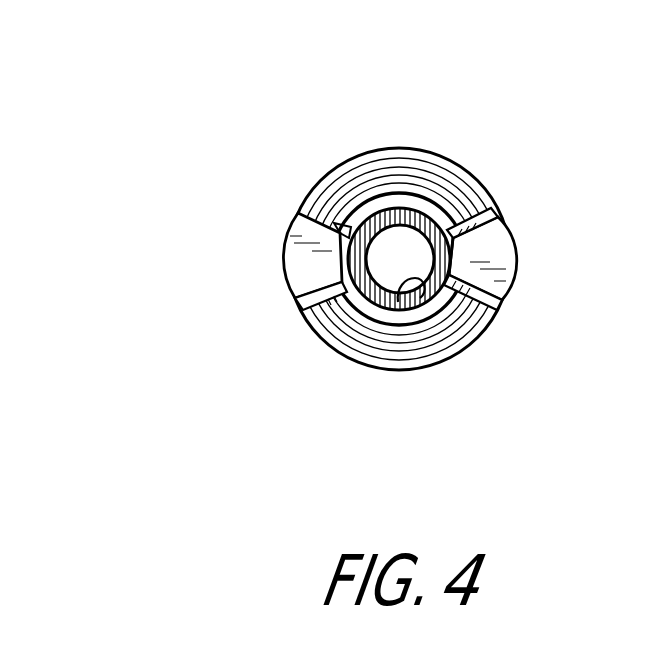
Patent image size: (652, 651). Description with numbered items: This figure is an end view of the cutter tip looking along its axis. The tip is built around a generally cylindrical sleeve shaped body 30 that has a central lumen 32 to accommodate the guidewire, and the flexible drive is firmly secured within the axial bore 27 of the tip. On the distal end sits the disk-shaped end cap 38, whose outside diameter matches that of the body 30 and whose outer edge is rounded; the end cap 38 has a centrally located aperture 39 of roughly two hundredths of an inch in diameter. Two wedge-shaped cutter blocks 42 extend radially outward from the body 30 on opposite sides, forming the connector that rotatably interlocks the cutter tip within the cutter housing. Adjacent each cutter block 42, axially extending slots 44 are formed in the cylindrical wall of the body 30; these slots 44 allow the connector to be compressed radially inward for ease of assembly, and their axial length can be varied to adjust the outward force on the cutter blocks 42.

The axial bore 27 is at (400, 262).
The cylindrical sleeve shaped body 30 is at (390, 196).
The central lumen 32 is at (412, 210).
The end cap 38 is at (451, 256).
The aperture 39 is at (398, 302).
The cutter blocks 42 is at (300, 264).
The axially extending slots 44 is at (310, 214).